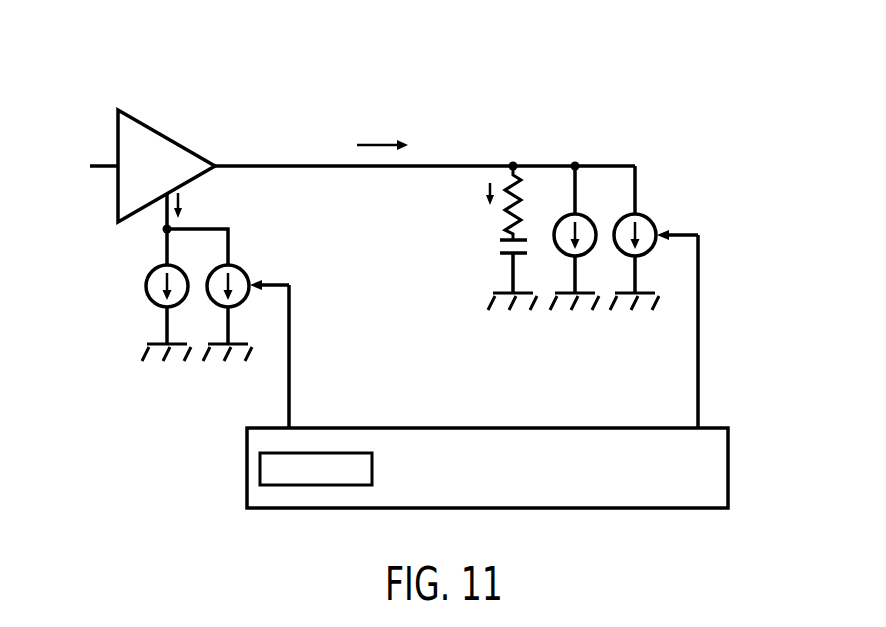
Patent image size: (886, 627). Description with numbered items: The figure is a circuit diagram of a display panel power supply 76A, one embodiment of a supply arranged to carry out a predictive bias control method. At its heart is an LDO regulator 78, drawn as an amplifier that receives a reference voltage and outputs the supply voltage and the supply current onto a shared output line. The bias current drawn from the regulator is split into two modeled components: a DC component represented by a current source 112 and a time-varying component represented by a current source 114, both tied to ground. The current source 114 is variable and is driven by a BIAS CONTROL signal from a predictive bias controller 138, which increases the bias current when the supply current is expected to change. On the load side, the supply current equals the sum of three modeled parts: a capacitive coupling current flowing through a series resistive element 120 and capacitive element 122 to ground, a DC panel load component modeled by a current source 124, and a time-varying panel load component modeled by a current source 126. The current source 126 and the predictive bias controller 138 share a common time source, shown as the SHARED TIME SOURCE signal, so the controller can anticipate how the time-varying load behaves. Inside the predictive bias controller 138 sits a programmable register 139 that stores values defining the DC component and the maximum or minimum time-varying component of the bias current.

The display panel power supply 76A is at (68, 72).
The LDO regulator 78 is at (167, 137).
The current source 112 is at (152, 301).
The current source 114 is at (245, 302).
The resistive element 120 is at (517, 178).
The capacitive element 122 is at (505, 253).
The current source 124 is at (558, 218).
The current source 126 is at (652, 252).
The predictive bias controller 138 is at (488, 428).
The programmable register 139 is at (262, 468).